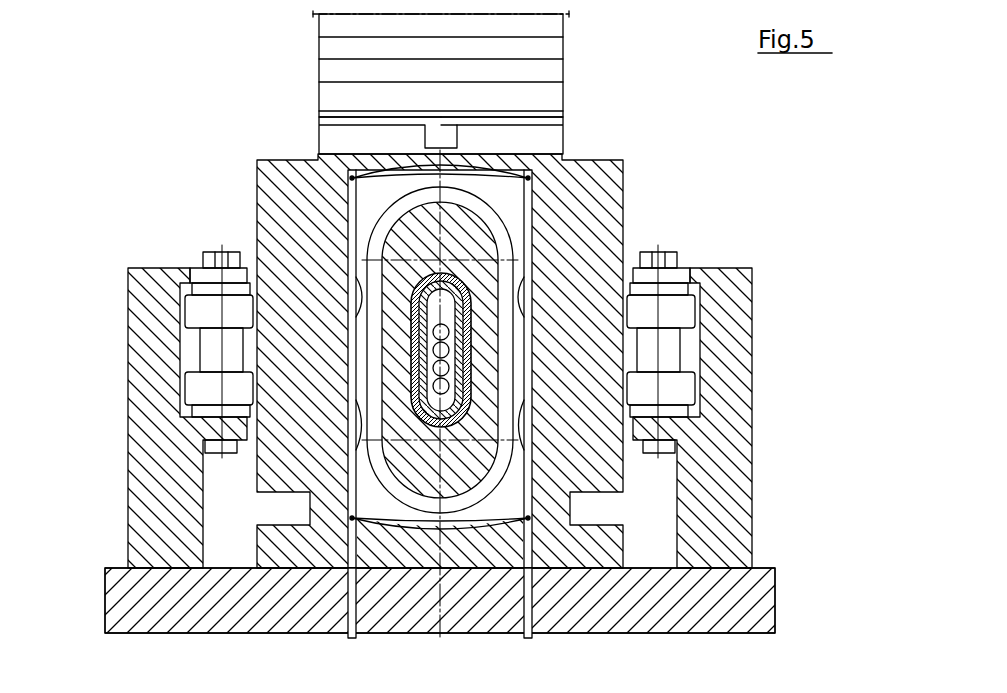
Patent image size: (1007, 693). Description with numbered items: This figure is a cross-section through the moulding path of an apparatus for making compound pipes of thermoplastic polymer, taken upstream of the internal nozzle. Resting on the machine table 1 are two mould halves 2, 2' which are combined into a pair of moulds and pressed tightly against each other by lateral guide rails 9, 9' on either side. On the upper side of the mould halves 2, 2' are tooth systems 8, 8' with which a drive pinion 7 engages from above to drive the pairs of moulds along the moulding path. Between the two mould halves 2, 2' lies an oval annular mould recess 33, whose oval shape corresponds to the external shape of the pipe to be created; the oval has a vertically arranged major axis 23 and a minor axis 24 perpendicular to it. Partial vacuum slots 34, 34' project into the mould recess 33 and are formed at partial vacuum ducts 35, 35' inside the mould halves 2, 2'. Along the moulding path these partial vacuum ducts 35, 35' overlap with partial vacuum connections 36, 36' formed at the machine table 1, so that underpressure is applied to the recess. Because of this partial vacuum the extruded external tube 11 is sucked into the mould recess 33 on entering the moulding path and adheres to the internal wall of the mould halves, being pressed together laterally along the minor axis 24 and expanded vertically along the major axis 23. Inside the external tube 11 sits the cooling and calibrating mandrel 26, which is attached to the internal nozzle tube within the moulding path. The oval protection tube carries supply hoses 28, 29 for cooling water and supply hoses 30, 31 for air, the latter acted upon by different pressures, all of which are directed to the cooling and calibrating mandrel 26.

The machine table 1 is at (745, 568).
The mould half 2 is at (340, 346).
The mould half 2' is at (633, 356).
The drive pinion 7 is at (332, 47).
The tooth system 8 is at (341, 131).
The tooth system 8' is at (549, 131).
The lateral guide rail 9 is at (155, 391).
The lateral guide rail 9' is at (727, 406).
The external tube 11 is at (527, 250).
The major axis 23 is at (442, 232).
The minor axis 24 is at (495, 350).
The cooling and calibrating mandrel 26 is at (404, 372).
The supply hose for cooling water 28 is at (408, 352).
The supply hose for cooling water 29 is at (472, 335).
The supply hose for air 30 is at (403, 395).
The supply hose for air 31 is at (473, 395).
The oval annular mould recess 33 is at (362, 232).
The partial vacuum slot 34 is at (206, 369).
The partial vacuum slot 34' is at (677, 369).
The partial vacuum duct 35 is at (290, 528).
The partial vacuum duct 35' is at (594, 513).
The partial vacuum connection 36 is at (203, 603).
The partial vacuum connection 36' is at (680, 603).